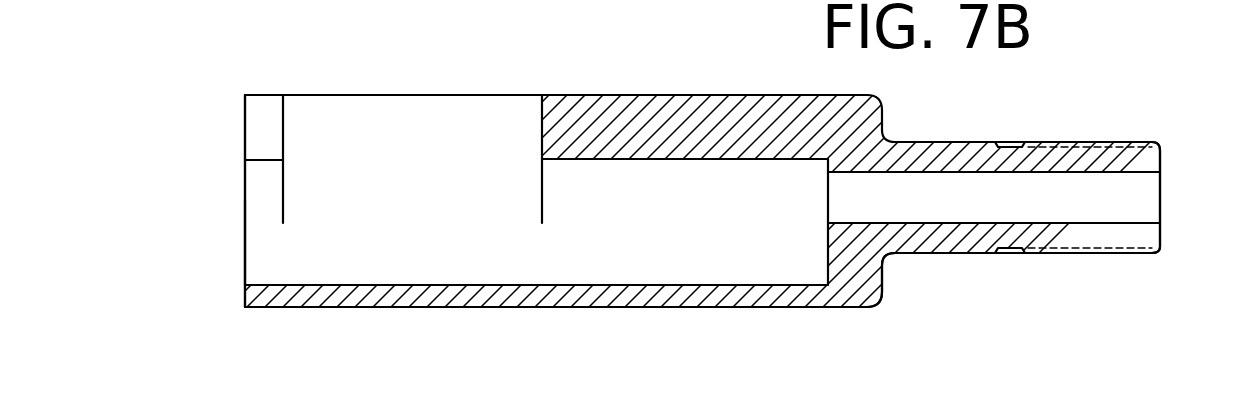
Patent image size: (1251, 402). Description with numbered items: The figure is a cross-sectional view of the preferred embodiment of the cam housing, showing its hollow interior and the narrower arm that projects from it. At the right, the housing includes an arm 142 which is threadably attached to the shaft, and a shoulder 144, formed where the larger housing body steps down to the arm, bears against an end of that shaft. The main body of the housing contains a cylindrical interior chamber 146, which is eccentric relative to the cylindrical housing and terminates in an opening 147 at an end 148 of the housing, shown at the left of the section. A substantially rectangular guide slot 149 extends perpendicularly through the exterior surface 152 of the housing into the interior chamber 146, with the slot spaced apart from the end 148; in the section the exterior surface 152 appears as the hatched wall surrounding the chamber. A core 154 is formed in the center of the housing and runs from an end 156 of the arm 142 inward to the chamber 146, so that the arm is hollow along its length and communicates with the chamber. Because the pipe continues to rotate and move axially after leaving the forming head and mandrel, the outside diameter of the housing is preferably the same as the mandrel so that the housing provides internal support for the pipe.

The arm 142 is at (950, 142).
The shoulder 144 is at (887, 275).
The cylindrical interior chamber 146 is at (630, 248).
The opening 147 is at (245, 226).
The end of the housing 148 is at (245, 133).
The guide slot 149 is at (407, 143).
The exterior surface 152 is at (655, 95).
The core 154 is at (1022, 185).
The end of the arm 156 is at (1160, 159).